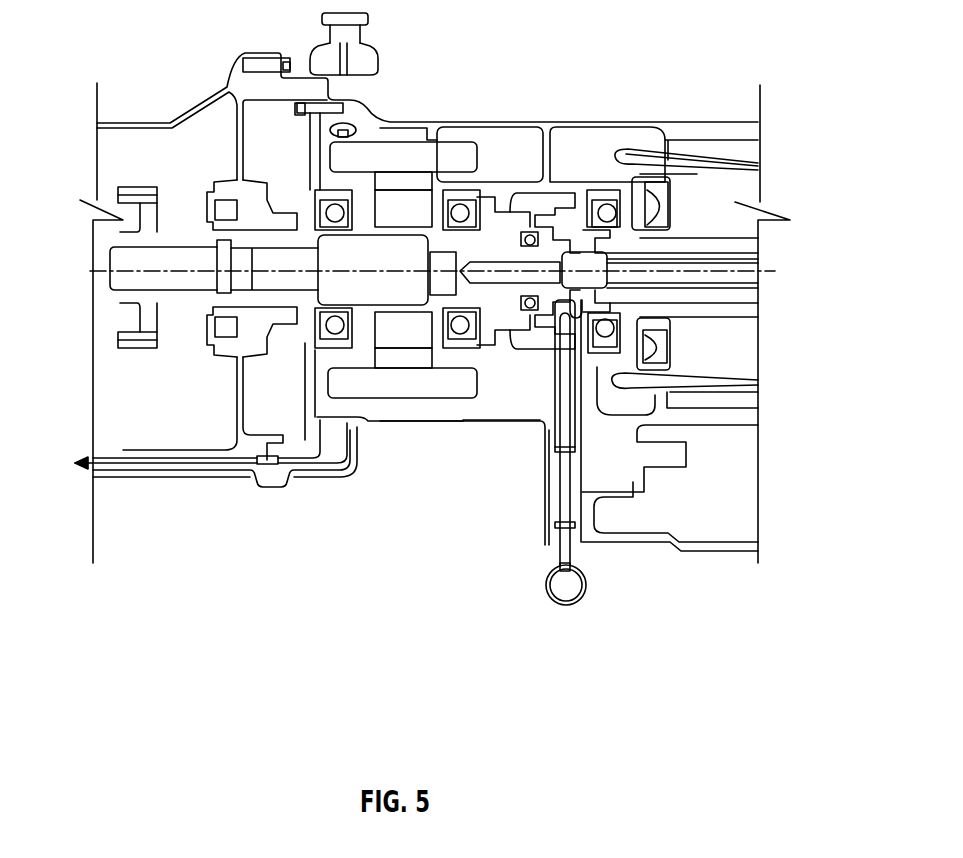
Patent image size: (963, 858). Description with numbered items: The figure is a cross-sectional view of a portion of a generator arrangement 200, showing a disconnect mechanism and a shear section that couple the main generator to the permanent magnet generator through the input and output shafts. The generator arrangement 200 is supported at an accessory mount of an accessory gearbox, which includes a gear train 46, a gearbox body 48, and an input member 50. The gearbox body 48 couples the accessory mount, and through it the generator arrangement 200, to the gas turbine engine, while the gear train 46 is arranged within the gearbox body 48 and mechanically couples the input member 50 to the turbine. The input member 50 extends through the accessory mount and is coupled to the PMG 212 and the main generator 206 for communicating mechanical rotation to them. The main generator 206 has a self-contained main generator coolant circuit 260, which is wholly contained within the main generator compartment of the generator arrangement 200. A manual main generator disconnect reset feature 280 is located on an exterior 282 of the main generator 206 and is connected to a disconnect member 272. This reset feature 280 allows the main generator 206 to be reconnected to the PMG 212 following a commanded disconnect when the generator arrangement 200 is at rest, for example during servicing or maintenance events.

The generator arrangement 200 is at (130, 637).
The PMG 212 is at (358, 630).
The main generator 206 is at (631, 633).
The gear train 46 is at (175, 423).
The gearbox body 48 is at (262, 130).
The input member 50 is at (188, 272).
The main generator coolant circuit 260 is at (593, 157).
The disconnect member 272 is at (568, 477).
The manual main generator disconnect reset feature 280 is at (545, 585).
The exterior 282 is at (618, 542).